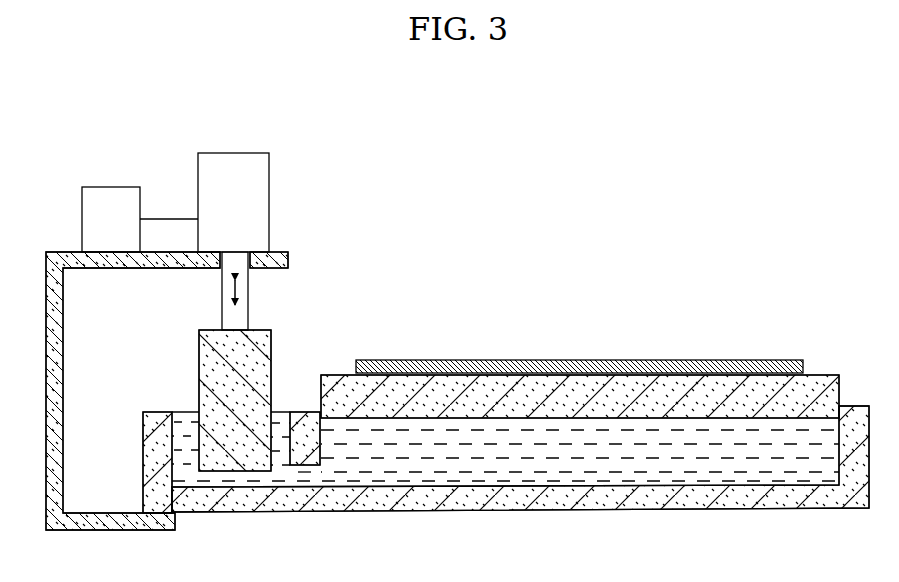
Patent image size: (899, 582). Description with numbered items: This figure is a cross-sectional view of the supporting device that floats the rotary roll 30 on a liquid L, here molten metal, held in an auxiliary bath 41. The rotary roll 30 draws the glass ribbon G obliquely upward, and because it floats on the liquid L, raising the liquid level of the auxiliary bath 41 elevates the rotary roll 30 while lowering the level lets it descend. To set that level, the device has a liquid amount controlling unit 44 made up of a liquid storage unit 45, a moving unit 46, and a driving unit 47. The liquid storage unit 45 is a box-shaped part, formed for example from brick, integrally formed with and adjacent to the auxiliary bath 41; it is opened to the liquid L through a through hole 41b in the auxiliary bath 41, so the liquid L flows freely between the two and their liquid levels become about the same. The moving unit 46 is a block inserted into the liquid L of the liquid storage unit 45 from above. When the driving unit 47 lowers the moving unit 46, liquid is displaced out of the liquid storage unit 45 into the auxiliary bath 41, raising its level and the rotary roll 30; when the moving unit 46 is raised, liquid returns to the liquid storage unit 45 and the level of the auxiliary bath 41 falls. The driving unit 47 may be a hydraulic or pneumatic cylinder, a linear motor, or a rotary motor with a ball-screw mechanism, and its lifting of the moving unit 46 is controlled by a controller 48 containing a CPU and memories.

The rotary roll 30 is at (820, 374).
The auxiliary bath 41 is at (858, 406).
The through hole 41b is at (304, 480).
The liquid amount controlling unit 44 is at (279, 145).
The liquid storage unit 45 is at (150, 466).
The moving unit 46 is at (209, 375).
The driving unit 47 is at (231, 163).
The controller 48 is at (110, 198).
The glass ribbon G is at (700, 360).
The liquid L is at (281, 412).